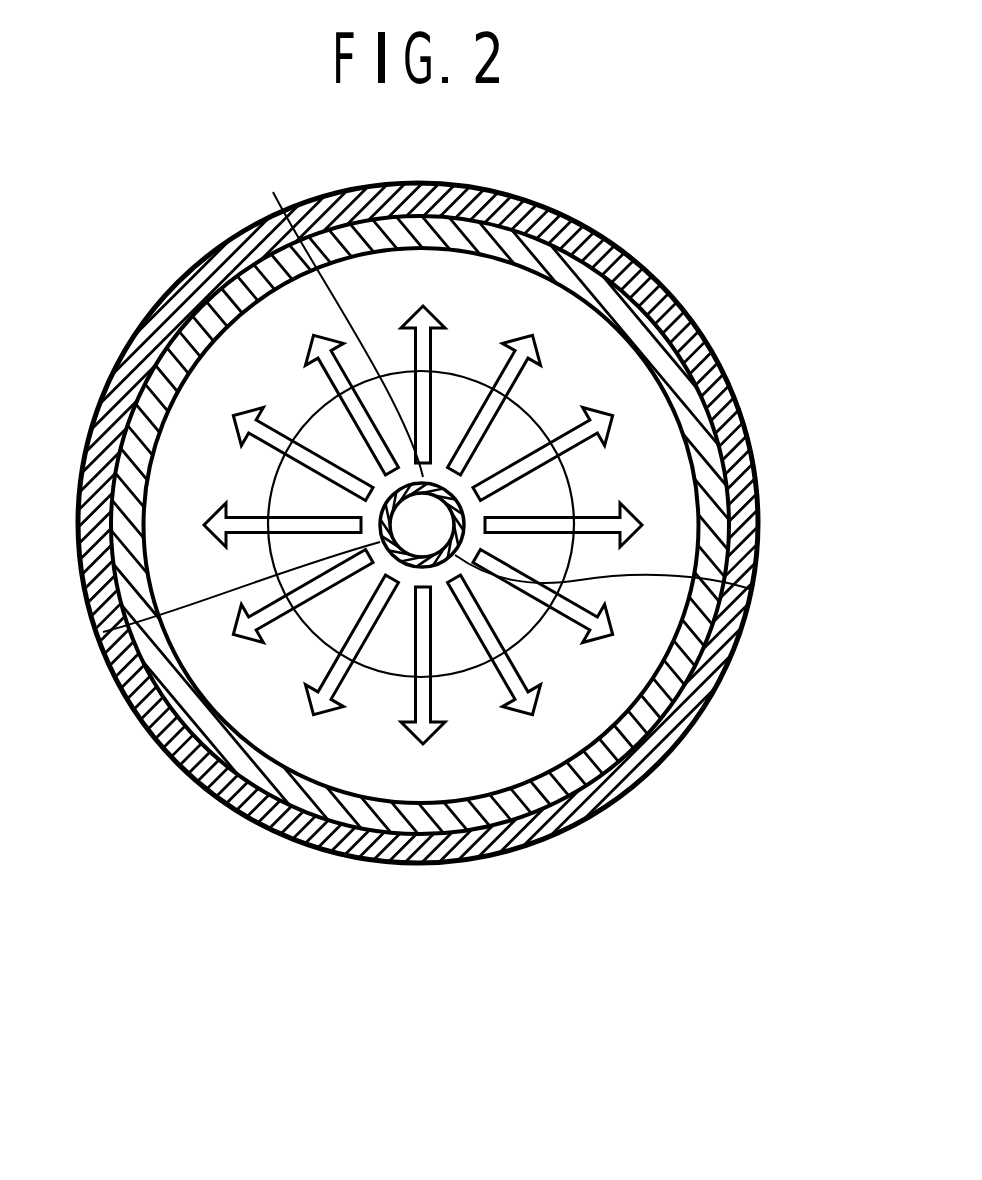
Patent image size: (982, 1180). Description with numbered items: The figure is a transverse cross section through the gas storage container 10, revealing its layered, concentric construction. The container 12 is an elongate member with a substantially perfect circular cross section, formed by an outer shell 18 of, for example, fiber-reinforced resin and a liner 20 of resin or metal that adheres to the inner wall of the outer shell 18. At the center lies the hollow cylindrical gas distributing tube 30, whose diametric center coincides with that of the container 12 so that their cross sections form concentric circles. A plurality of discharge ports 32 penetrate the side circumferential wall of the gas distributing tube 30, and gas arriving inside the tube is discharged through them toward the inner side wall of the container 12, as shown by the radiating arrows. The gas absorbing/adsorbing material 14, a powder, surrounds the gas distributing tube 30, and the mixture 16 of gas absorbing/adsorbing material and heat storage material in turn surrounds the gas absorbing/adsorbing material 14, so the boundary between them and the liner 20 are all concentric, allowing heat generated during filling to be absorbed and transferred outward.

The gas storage container 10 is at (619, 136).
The container 12 is at (450, 534).
The gas absorbing/adsorbing material 14 is at (526, 468).
The mixture 16 is at (638, 402).
The outer shell 18 is at (374, 852).
The liner 20 is at (448, 820).
The gas distributing tube 30 is at (103, 632).
The discharge ports 32 is at (787, 602).